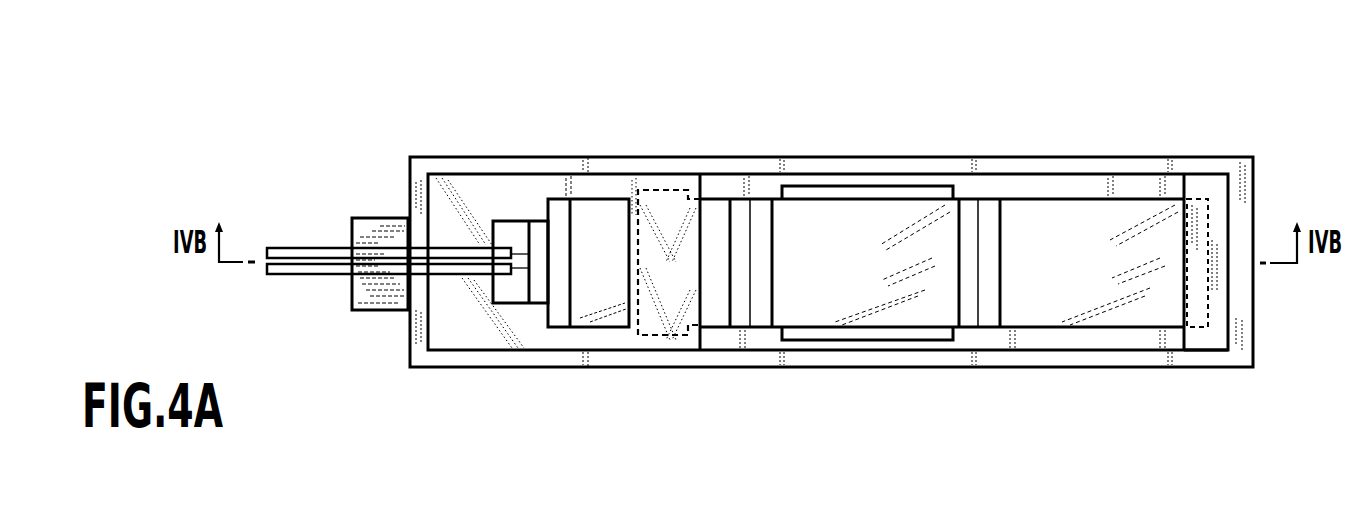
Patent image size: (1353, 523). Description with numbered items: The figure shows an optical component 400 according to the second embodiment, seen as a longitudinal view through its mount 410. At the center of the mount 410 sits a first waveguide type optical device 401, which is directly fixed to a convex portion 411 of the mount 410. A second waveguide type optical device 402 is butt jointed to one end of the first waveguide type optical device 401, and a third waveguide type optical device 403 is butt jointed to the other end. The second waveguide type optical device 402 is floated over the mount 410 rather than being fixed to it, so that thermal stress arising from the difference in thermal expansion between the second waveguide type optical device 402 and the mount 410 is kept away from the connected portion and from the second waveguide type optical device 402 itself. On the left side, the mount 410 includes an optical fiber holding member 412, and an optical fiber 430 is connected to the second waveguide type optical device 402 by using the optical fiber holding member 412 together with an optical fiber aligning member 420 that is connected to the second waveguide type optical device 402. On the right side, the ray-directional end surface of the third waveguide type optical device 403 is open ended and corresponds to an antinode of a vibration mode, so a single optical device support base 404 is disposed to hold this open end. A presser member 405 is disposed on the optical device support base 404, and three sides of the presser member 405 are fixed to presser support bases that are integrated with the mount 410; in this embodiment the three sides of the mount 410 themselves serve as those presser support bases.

The optical component 400 is at (1146, 108).
The first waveguide type optical device 401 is at (855, 208).
The second waveguide type optical device 402 is at (597, 210).
The third waveguide type optical device 403 is at (1060, 208).
The optical device support base 404 is at (1213, 243).
The presser member 405 is at (1213, 341).
The mount 410 is at (1057, 363).
The convex portion 411 is at (853, 335).
The optical fiber holding member 412 is at (375, 220).
The optical fiber aligning member 420 is at (519, 222).
The optical fiber 430 is at (306, 230).